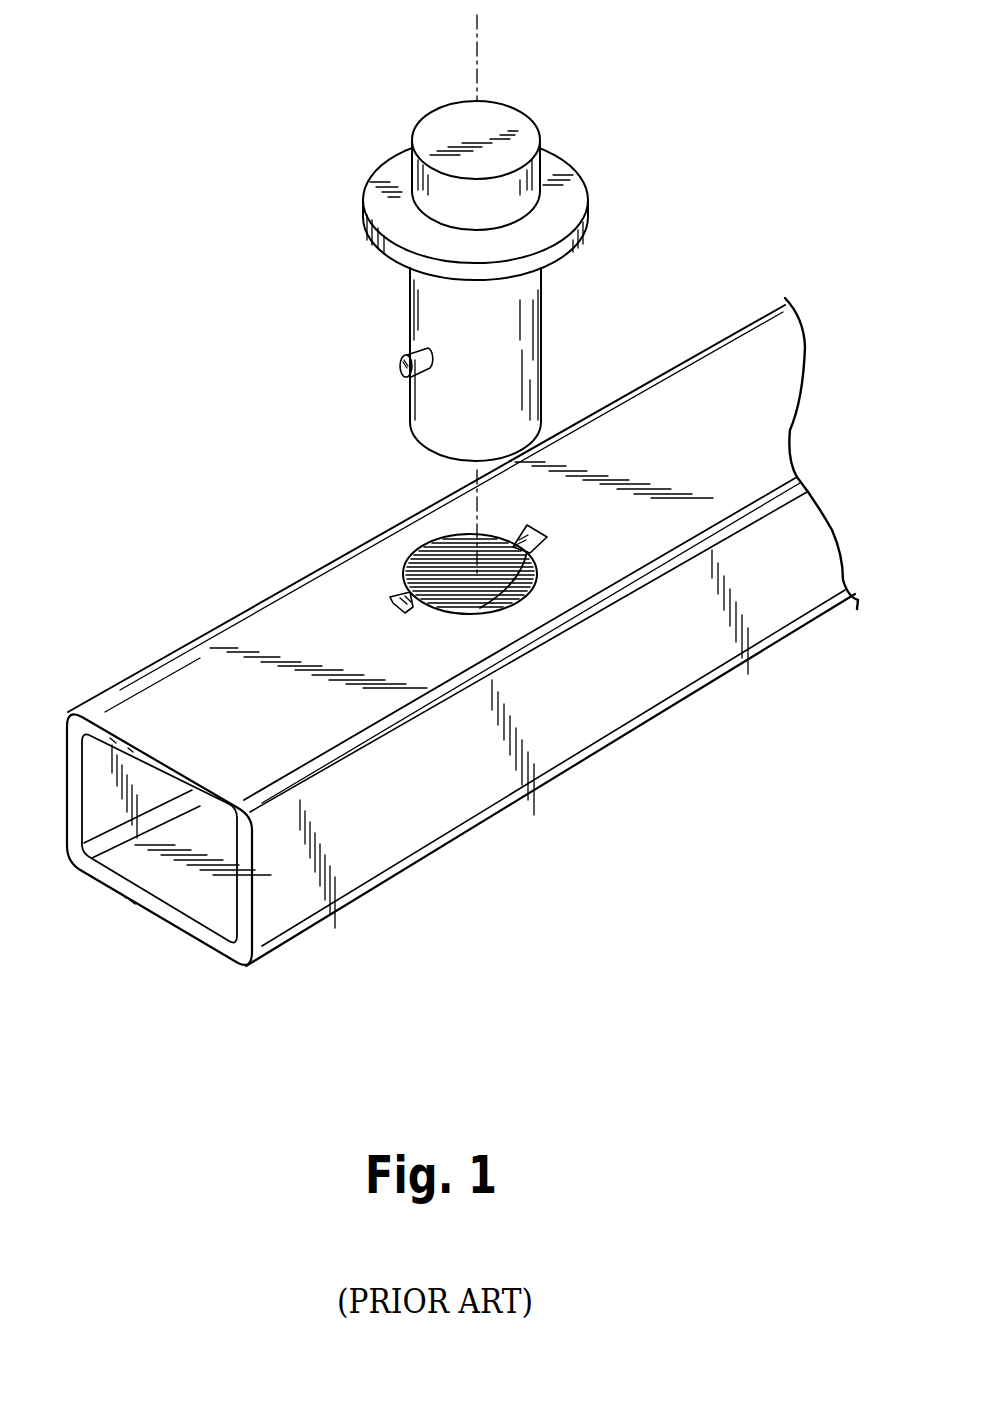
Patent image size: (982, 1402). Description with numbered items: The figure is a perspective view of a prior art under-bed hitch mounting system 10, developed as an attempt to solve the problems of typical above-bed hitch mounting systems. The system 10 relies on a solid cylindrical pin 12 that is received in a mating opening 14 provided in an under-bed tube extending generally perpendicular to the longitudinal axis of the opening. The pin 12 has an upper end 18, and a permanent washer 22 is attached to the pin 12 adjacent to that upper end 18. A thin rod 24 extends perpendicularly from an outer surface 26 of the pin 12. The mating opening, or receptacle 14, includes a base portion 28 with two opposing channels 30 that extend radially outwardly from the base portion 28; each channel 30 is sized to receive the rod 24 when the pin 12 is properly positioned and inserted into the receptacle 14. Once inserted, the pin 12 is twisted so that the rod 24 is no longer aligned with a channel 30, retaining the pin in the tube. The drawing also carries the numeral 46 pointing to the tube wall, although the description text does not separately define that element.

The under-bed system 10 is at (287, 255).
The solid cylindrical pin 12 is at (503, 125).
The mating opening 14 is at (427, 553).
The upper end 18 is at (457, 118).
The permanent washer 22 is at (573, 192).
The thin rod 24 is at (397, 370).
The outer surface 26 is at (518, 332).
The base portion 28 is at (490, 612).
The channels 30 is at (525, 535).
The receiver tube 46 is at (423, 815).